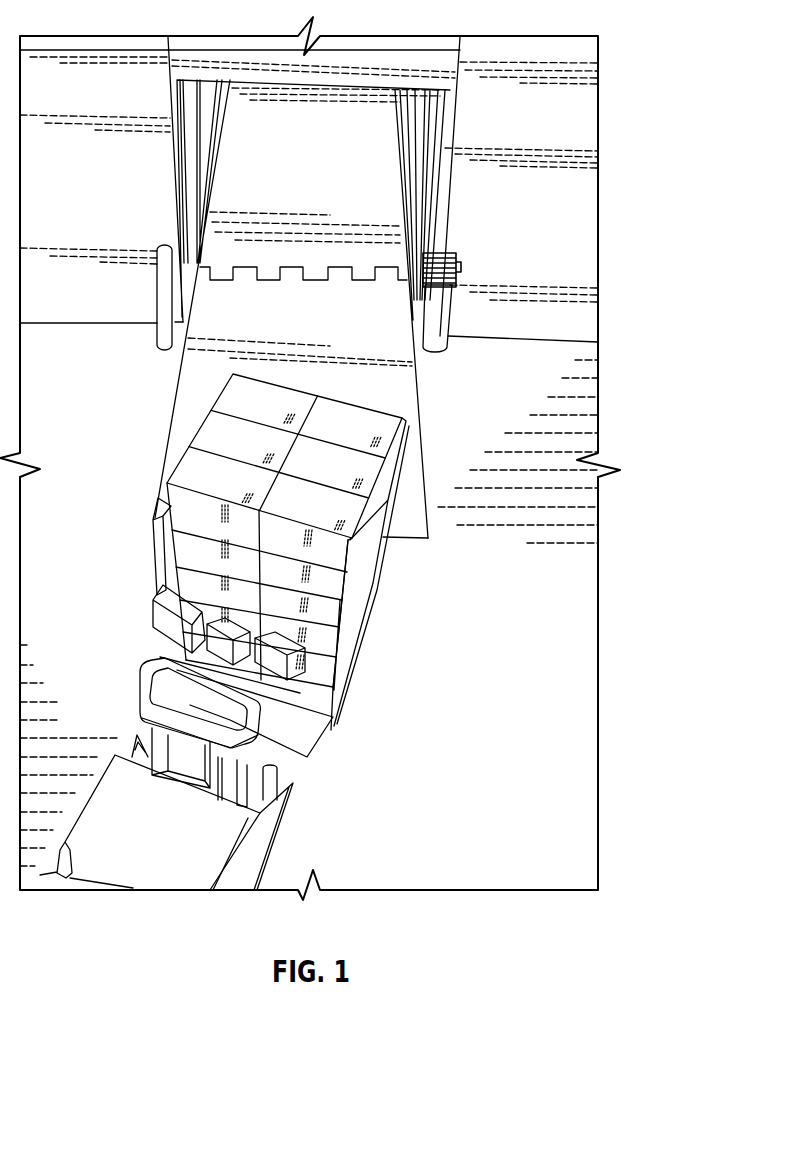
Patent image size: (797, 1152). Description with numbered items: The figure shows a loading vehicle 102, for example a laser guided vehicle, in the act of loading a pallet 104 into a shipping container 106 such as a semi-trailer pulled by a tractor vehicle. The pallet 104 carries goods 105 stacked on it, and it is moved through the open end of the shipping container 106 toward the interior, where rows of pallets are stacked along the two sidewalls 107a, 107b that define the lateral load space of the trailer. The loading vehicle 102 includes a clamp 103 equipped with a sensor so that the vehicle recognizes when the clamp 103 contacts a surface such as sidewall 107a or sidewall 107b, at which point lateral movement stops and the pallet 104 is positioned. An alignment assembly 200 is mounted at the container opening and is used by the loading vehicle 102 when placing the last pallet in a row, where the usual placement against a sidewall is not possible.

The loading vehicle 102 is at (125, 793).
The clamp 103 is at (373, 580).
The pallet 104 is at (370, 618).
The goods 105 is at (402, 432).
The shipping container 106 is at (447, 120).
The sidewall 107a is at (200, 152).
The sidewall 107b is at (420, 171).
The alignment assembly 200 is at (435, 253).